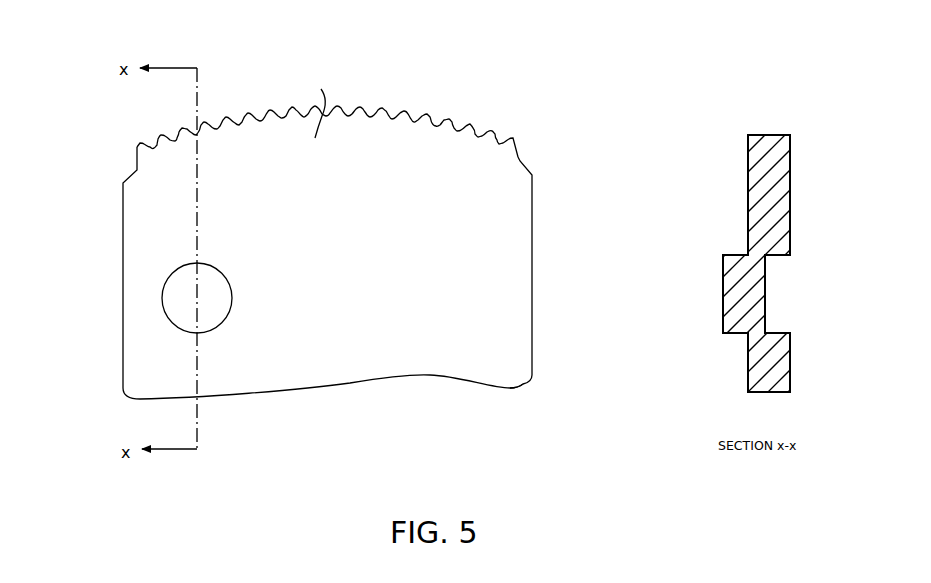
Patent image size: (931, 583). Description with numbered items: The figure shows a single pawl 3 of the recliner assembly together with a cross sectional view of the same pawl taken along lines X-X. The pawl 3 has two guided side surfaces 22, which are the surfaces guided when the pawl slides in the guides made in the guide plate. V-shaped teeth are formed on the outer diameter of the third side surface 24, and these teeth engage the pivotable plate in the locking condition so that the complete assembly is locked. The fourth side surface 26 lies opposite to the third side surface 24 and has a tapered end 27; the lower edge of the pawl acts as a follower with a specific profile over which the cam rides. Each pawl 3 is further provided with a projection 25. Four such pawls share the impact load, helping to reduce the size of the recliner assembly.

The pawl 3 is at (316, 103).
The guided side surfaces 22 is at (125, 217).
The third side surface 24 is at (450, 120).
The projection 25 is at (163, 323).
The fourth side surface 26 is at (350, 383).
The tapered end 27 is at (523, 384).